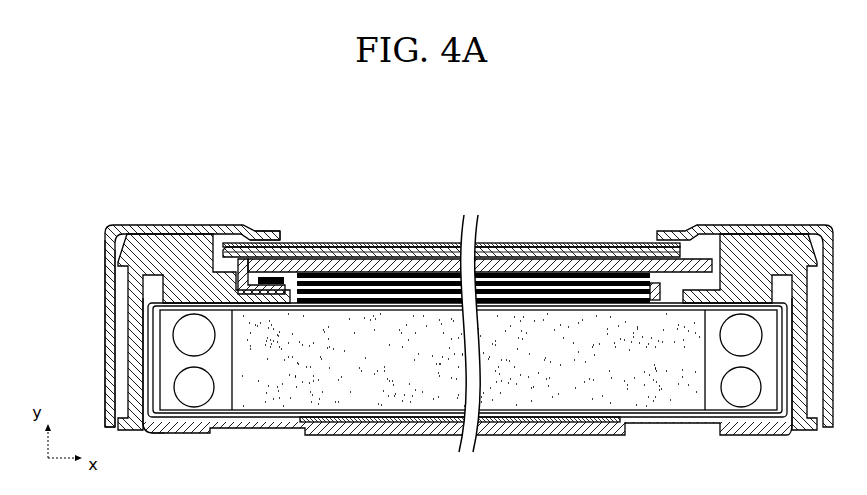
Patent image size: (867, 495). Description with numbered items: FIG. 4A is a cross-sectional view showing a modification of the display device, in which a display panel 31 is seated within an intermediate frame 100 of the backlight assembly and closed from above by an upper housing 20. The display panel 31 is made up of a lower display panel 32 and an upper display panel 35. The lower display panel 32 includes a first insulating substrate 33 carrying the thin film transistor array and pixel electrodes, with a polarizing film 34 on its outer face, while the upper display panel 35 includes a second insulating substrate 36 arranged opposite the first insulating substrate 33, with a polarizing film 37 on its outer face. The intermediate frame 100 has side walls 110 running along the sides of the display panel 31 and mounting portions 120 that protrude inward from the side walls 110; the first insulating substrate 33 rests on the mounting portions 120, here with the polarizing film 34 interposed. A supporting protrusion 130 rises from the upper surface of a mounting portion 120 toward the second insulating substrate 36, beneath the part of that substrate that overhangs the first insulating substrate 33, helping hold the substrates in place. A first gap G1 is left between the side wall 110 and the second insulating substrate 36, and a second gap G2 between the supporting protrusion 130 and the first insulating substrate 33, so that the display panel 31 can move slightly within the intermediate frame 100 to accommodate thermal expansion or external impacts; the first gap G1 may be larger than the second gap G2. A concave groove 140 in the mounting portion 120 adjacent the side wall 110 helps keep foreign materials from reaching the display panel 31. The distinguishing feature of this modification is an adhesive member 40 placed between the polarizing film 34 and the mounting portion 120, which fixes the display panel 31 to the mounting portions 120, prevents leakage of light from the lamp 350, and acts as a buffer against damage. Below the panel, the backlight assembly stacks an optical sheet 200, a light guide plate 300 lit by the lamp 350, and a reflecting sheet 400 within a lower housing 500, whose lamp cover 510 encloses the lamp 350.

The concave groove 140 is at (190, 236).
The intermediate frame 100 is at (52, 262).
The supporting protrusion 130 is at (104, 268).
The mounting portion 120 is at (114, 290).
The side wall 110 is at (128, 302).
The upper housing 20 is at (104, 324).
The first gap G1 is at (223, 246).
The second gap G2 is at (255, 232).
The adhesive member 40 is at (272, 231).
The display panel 31 is at (338, 162).
The upper display panel 35 is at (354, 194).
The second insulating substrate 36 is at (357, 246).
The polarizing film 37 is at (316, 246).
The lower display panel 32 is at (433, 194).
The first insulating substrate 33 is at (397, 272).
The polarizing film 34 is at (433, 272).
The optical sheet 200 is at (597, 243).
The light guide plate 300 is at (419, 400).
The lamp 350 is at (195, 410).
The reflecting sheet 400 is at (357, 421).
The lower housing 500 is at (288, 434).
The lamp cover 510 is at (157, 434).